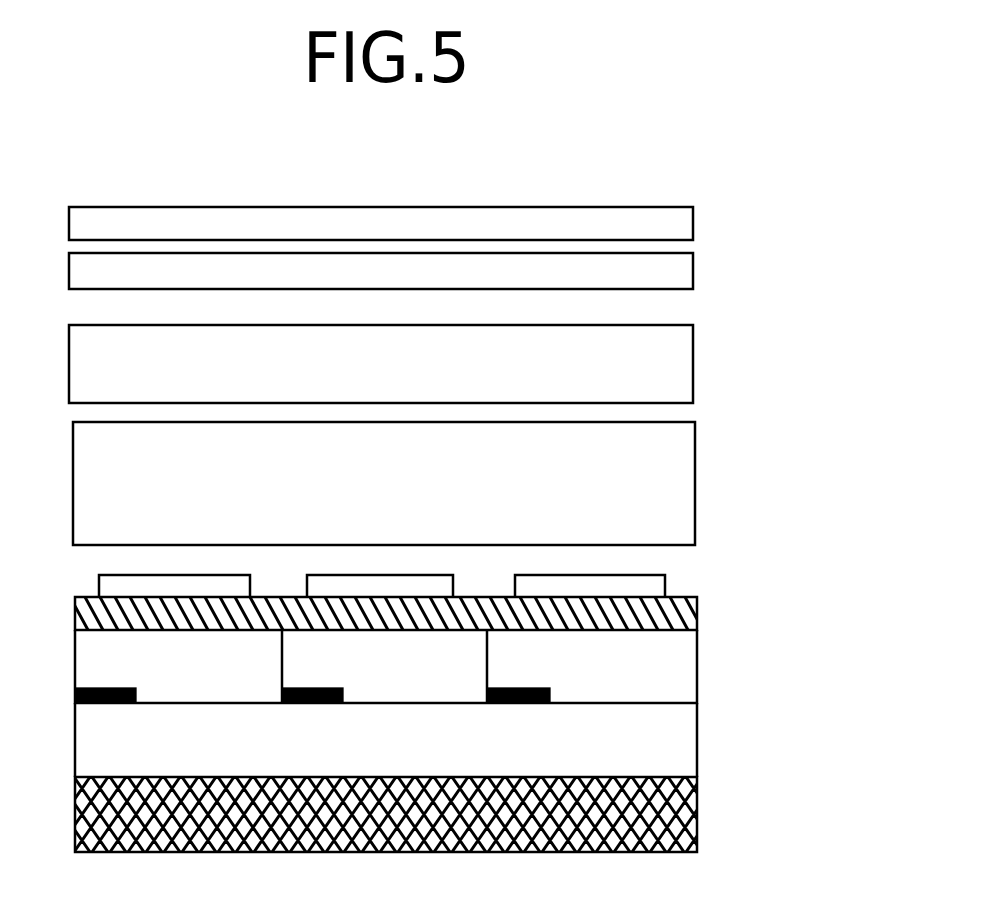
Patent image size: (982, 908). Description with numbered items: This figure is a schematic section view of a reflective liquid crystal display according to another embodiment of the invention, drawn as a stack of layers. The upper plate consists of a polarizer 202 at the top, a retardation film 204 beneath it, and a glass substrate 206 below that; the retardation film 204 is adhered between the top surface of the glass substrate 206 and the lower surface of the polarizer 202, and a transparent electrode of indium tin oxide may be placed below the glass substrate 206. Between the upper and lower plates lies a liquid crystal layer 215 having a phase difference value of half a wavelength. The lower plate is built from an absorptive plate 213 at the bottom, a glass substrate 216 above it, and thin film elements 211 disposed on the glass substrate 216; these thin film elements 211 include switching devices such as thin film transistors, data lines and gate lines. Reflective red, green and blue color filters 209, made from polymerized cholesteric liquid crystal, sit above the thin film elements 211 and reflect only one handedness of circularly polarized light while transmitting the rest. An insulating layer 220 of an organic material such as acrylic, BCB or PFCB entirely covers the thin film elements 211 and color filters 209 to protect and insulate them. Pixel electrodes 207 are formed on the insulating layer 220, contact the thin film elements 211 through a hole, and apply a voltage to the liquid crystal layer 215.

The polarizer 202 is at (693, 218).
The retardation film 204 is at (693, 263).
The glass substrate 206 is at (693, 357).
The liquid crystal layer 215 is at (695, 470).
The pixel electrode 207 is at (662, 575).
The insulating layer 220 is at (697, 605).
The reflective color filter 209 is at (697, 660).
The thin film element 211 is at (550, 688).
The glass substrate 216 is at (697, 740).
The absorptive plate 213 is at (697, 810).